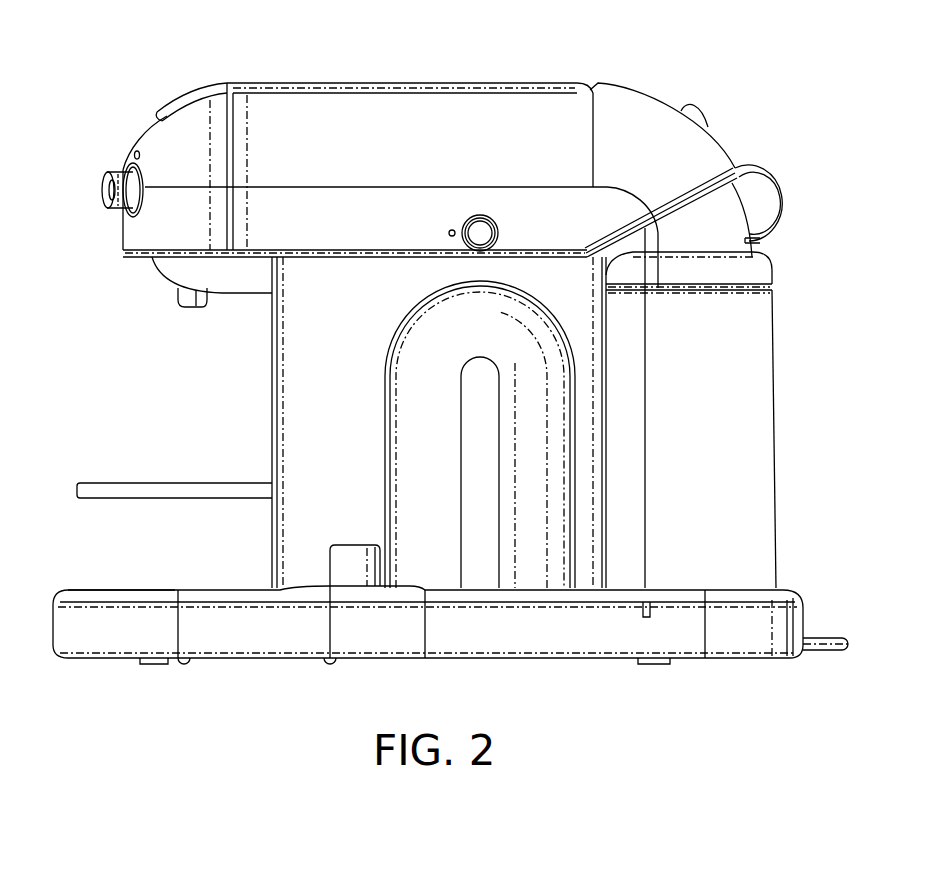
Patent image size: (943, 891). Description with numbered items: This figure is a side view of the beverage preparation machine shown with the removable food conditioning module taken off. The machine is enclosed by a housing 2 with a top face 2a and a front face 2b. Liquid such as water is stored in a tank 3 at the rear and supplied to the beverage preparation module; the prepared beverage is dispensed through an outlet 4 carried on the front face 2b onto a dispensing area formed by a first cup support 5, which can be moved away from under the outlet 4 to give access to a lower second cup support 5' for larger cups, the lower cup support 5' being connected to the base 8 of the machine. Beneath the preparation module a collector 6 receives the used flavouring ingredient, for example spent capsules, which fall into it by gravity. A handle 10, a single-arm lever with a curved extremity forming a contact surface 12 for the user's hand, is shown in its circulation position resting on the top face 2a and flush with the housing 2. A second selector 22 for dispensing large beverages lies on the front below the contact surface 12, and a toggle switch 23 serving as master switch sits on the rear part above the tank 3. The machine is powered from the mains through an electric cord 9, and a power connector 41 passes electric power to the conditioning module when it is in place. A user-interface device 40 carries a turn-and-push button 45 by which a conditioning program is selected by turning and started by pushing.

The housing 2 is at (390, 233).
The top face 2a is at (650, 100).
The front face 2b is at (78, 291).
The tank 3 is at (765, 445).
The outlet 4 is at (177, 297).
The first cup support 5 is at (174, 459).
The second cup support 5' is at (121, 557).
The collector 6 is at (270, 428).
The base 8 is at (493, 645).
The electric cord 9 is at (818, 646).
The handle 10 is at (302, 86).
The contact surface 12 is at (178, 97).
The second selector 22 is at (106, 190).
The toggle switch 23 is at (700, 116).
The user-interface device 40 is at (505, 226).
The electric power connector 41 is at (355, 548).
The user-interface 45 is at (482, 216).